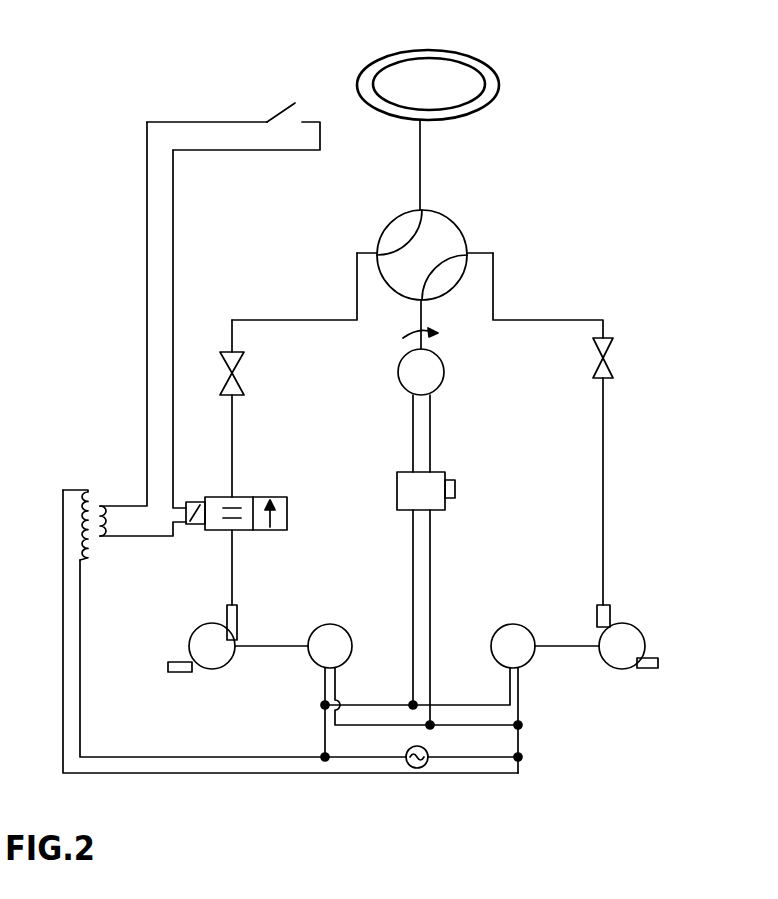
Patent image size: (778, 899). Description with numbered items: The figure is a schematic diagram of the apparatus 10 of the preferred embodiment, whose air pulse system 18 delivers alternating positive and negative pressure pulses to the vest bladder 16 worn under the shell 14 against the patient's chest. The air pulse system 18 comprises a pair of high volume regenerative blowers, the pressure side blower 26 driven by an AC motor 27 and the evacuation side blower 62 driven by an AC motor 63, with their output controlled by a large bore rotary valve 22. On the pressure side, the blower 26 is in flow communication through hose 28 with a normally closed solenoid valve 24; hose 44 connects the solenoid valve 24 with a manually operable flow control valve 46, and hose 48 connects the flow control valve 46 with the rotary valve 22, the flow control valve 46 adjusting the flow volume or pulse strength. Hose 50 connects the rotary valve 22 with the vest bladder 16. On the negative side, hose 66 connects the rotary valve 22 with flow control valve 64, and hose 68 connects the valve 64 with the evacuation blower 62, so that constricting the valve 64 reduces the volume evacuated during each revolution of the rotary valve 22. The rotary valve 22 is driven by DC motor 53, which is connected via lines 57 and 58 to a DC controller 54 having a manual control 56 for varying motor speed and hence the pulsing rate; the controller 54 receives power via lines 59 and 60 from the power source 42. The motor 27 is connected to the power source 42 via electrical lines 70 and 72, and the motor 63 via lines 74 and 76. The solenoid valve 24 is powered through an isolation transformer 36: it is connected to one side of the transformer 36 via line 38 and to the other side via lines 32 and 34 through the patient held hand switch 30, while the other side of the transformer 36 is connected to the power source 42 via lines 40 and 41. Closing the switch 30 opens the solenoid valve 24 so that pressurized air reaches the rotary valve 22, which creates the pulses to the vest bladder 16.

The apparatus 10 is at (582, 140).
The shell 14 is at (423, 49).
The vest bladder 16 is at (483, 78).
The air pulse system 18 is at (668, 445).
The rotary valve 22 is at (455, 292).
The solenoid valve 24 is at (287, 512).
The pressure side blower 26 is at (197, 625).
The motor 27 is at (317, 663).
The hose 28 is at (232, 577).
The hand switch 30 is at (287, 105).
The line 32 is at (172, 258).
The line 34 is at (147, 203).
The isolation transformer 36 is at (88, 493).
The line 38 is at (147, 537).
The line 40 is at (62, 718).
The line 41 is at (80, 717).
The power source 42 is at (415, 767).
The hose 44 is at (232, 472).
The flow control valve 46 is at (237, 380).
The hose 48 is at (285, 320).
The hose 50 is at (418, 163).
The DC motor 53 is at (441, 380).
The controller 54 is at (437, 505).
The manual control 56 is at (455, 480).
The line 57 is at (432, 437).
The line 58 is at (413, 437).
The line 59 is at (432, 610).
The line 60 is at (412, 558).
The evacuation side blower 62 is at (627, 623).
The motor 63 is at (530, 668).
The flow control valve 64 is at (610, 375).
The hose 66 is at (560, 320).
The hose 68 is at (603, 483).
The electrical line 70 is at (322, 682).
The electrical line 72 is at (335, 685).
The line 74 is at (508, 687).
The line 76 is at (520, 697).